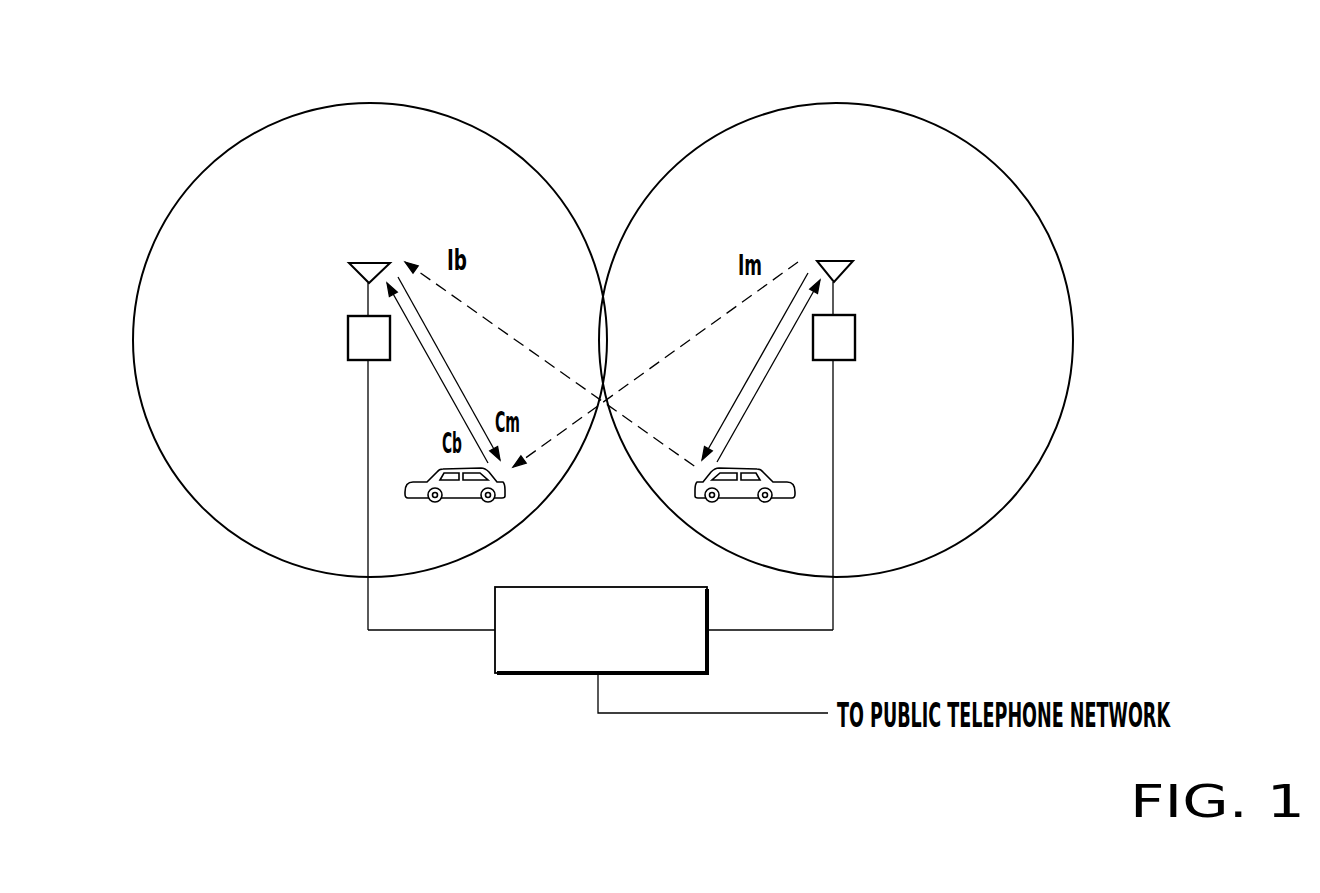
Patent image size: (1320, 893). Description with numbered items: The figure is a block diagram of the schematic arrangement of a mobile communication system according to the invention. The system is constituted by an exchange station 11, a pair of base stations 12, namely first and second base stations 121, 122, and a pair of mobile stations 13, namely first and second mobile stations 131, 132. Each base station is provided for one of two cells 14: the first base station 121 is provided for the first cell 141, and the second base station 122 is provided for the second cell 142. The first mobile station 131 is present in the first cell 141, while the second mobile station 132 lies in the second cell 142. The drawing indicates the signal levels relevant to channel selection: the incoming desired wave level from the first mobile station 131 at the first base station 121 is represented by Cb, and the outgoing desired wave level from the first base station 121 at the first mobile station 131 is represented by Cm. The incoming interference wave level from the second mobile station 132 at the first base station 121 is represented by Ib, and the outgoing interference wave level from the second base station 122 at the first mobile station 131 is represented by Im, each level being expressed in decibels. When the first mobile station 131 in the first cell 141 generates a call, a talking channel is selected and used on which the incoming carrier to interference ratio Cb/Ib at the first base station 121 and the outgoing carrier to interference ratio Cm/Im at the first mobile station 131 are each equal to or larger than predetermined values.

The exchange station 11 is at (647, 587).
The base station 12 is at (598, 445).
The first base station 121 is at (348, 340).
The second base station 122 is at (855, 333).
The mobile station 13 is at (600, 540).
The first mobile station 131 is at (458, 500).
The second mobile station 132 is at (738, 498).
The cell 14 is at (603, 308).
The first cell 141 is at (426, 107).
The second cell 142 is at (932, 120).